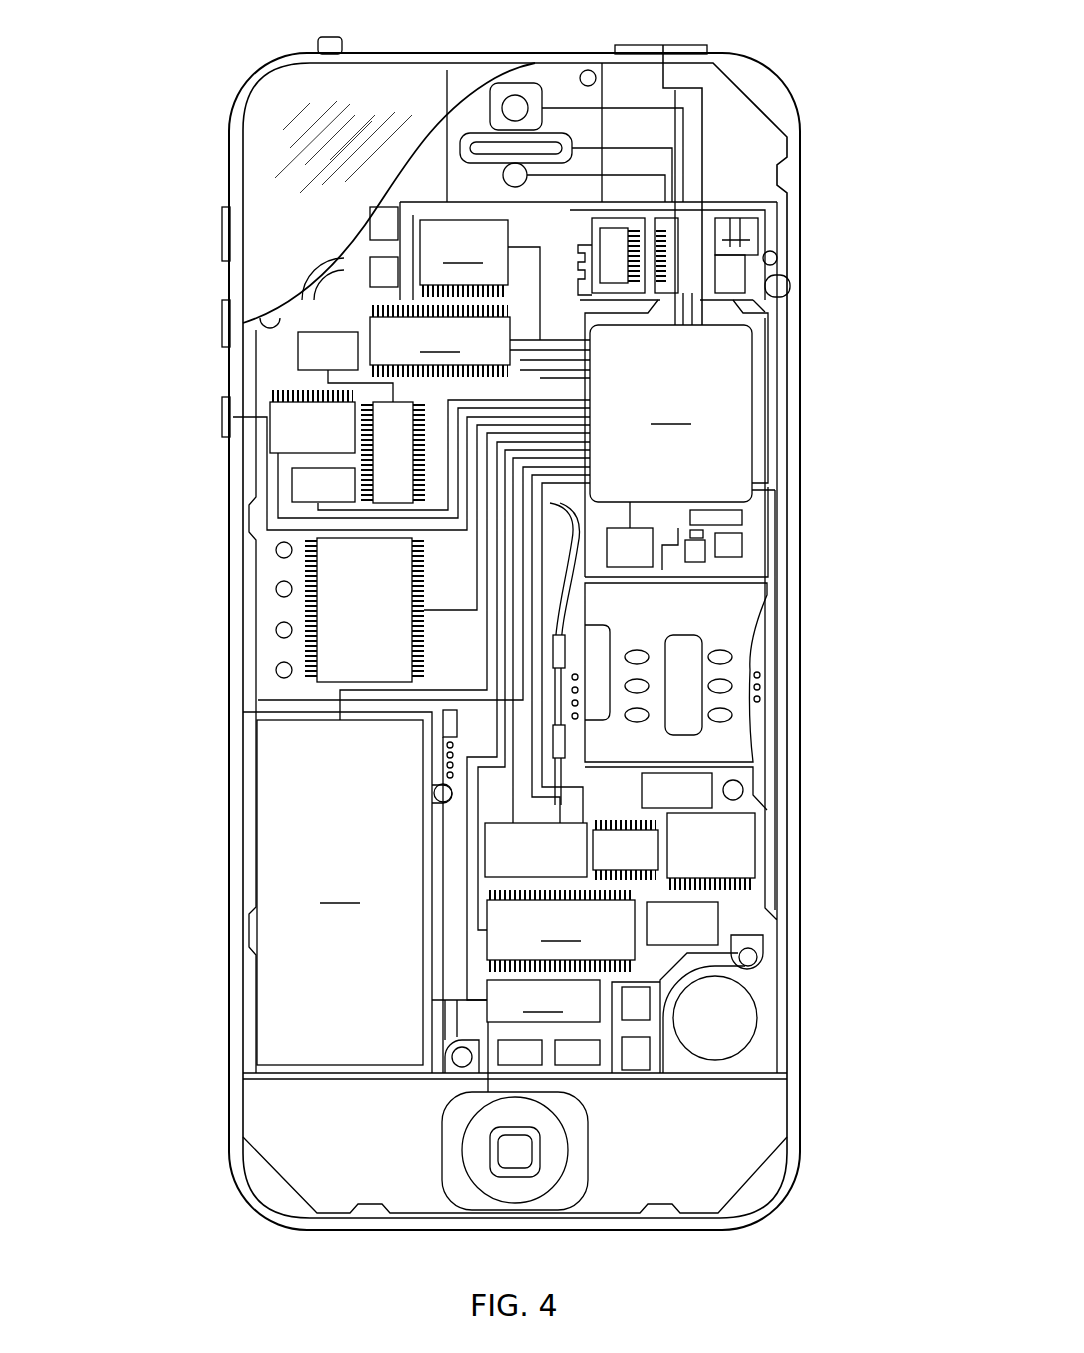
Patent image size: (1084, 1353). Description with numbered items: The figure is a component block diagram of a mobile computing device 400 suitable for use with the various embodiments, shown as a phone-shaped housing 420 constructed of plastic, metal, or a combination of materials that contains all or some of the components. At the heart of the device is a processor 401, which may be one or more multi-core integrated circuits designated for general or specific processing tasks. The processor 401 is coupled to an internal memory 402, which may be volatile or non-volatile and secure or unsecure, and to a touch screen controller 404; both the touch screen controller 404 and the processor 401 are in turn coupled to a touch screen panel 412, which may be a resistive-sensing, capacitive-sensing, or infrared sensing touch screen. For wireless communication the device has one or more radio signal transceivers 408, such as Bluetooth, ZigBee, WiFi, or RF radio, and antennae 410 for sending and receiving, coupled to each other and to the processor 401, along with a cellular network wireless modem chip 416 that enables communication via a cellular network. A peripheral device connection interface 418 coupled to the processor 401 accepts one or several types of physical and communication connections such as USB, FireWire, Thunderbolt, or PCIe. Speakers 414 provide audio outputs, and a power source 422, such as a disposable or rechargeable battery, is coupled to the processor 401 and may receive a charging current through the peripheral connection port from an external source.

The mobile computing device 400 is at (205, 68).
The processor 401 is at (671, 413).
The internal memory 402 is at (440, 341).
The touch screen controller 404 is at (464, 255).
The radio signal transceivers 408 is at (705, 232).
The antennae 410 is at (748, 273).
The touch screen panel 412 is at (262, 192).
The speakers 414 is at (477, 137).
The cellular network wireless modem chip 416 is at (561, 930).
The peripheral device connection interface 418 is at (543, 1001).
The housing 420 is at (800, 1053).
The power source 422 is at (340, 892).